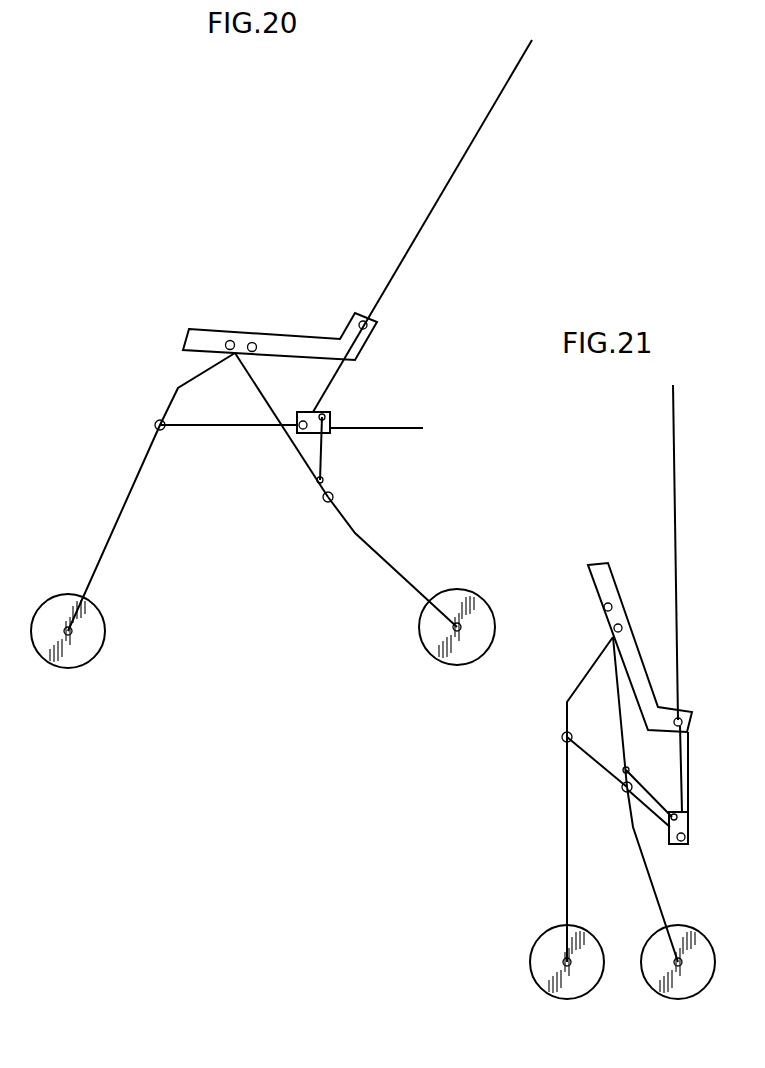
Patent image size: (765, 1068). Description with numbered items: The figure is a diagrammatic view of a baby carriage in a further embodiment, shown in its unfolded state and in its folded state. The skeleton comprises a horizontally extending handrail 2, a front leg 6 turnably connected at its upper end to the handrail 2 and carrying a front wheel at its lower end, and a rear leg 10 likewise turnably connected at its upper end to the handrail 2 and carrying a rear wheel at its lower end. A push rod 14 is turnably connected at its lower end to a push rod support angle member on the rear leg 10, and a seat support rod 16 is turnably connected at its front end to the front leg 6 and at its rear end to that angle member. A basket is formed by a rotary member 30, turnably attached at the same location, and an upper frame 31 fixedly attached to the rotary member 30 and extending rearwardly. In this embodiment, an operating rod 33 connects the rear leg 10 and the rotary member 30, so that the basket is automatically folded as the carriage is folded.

In FIG. 20, the handrail 2 is at (290, 338).
In FIG. 21, the handrail 2 is at (608, 582).
In FIG. 20, the front leg 6 is at (123, 508).
In FIG. 21, the front leg 6 is at (567, 830).
In FIG. 20, the rear leg 10 is at (378, 552).
In FIG. 21, the rear leg 10 is at (650, 875).
In FIG. 20, the push rod 14 is at (433, 203).
In FIG. 21, the push rod 14 is at (676, 485).
In FIG. 20, the seat support rod 16 is at (218, 428).
In FIG. 21, the seat support rod 16 is at (600, 766).
In FIG. 20, the rotary member 30 is at (338, 413).
In FIG. 21, the rotary member 30 is at (688, 828).
In FIG. 20, the upper frame 31 is at (403, 423).
In FIG. 21, the upper frame 31 is at (684, 752).
In FIG. 20, the operating rod 33 is at (325, 453).
In FIG. 21, the operating rod 33 is at (650, 794).